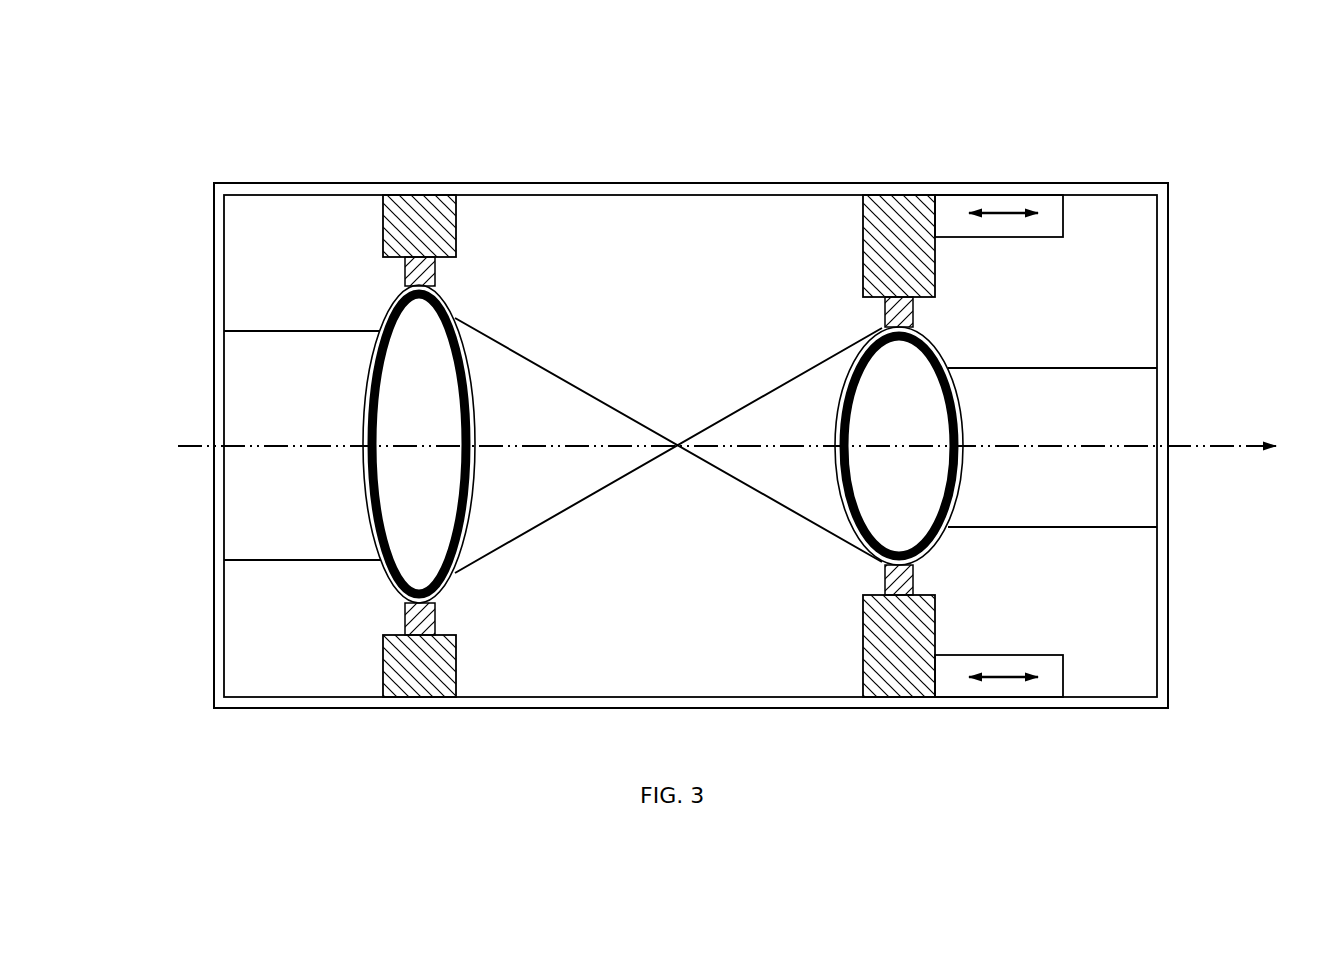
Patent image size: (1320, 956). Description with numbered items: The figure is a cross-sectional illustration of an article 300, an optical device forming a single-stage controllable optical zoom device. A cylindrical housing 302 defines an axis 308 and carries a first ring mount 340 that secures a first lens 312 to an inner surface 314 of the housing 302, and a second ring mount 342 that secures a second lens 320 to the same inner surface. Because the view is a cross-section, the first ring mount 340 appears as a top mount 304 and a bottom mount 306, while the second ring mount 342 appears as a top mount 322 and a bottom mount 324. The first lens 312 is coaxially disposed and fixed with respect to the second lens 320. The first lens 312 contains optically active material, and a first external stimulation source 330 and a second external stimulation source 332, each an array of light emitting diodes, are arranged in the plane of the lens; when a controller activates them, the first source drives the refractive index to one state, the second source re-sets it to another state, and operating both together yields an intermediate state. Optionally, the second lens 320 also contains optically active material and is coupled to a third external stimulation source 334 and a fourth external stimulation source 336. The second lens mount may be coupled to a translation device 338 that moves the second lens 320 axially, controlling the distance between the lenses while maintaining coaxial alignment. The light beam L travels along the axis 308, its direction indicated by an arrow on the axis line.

The article 300 is at (1115, 88).
The housing 302 is at (323, 183).
The top mount 304 is at (383, 226).
The bottom mount 306 is at (383, 670).
The axis 308 is at (290, 445).
The first lens 312 is at (455, 306).
The inner surface 314 is at (667, 697).
The second lens 320 is at (935, 336).
The top mount 322 is at (863, 220).
The bottom mount 324 is at (863, 670).
The first external stimulation source 330 is at (405, 272).
The second external stimulation source 332 is at (405, 622).
The third external stimulation source 334 is at (885, 313).
The fourth external stimulation source 336 is at (885, 583).
The translation device 338 is at (1033, 237).
The first ring mount 340 is at (474, 225).
The second ring mount 342 is at (945, 268).
The light beam L is at (582, 506).